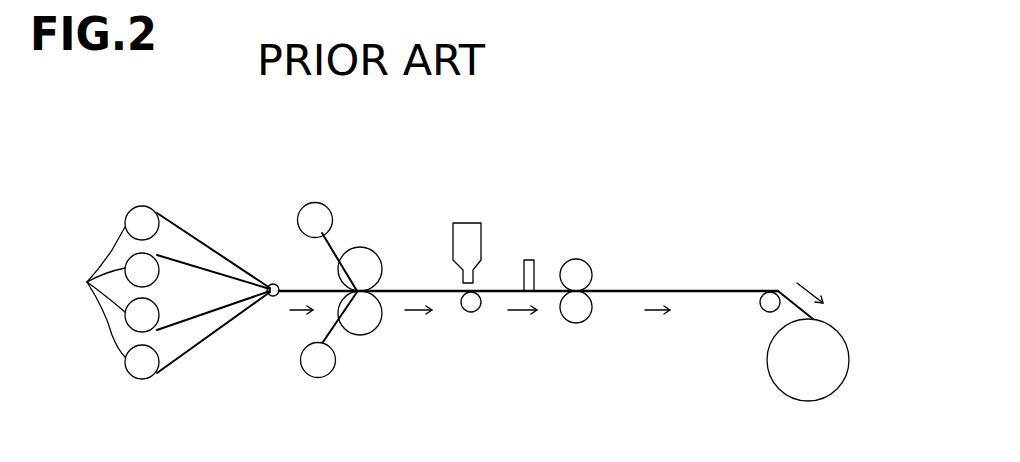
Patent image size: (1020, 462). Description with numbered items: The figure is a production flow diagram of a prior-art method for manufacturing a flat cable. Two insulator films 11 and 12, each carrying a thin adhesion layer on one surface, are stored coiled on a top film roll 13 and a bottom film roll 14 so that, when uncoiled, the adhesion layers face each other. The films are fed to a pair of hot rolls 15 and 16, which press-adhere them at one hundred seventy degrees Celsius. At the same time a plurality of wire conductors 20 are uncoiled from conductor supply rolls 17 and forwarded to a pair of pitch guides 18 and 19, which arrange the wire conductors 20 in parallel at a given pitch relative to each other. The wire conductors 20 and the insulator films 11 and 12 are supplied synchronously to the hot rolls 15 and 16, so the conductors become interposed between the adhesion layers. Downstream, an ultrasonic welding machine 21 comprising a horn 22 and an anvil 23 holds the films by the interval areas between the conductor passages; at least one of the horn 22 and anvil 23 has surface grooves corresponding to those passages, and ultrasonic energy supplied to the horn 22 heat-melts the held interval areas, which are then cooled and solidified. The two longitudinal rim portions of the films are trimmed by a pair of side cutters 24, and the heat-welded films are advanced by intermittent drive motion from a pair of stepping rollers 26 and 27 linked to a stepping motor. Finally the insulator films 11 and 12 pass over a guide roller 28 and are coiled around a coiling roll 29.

The insulator film 11 is at (308, 255).
The insulator film 12 is at (308, 328).
The top film roll 13 is at (322, 203).
The bottom film roll 14 is at (335, 378).
The hot roll 15 is at (365, 248).
The hot roll 16 is at (369, 333).
The conductor supply roll 17 is at (90, 292).
The pitch guide 18 is at (271, 283).
The pitch guide 19 is at (272, 297).
The wire conductor 20 is at (208, 270).
The ultrasonic welding machine 21 is at (455, 212).
The horn 22 is at (481, 222).
The anvil 23 is at (473, 313).
The side cutter 24 is at (534, 260).
The stepping roller 26 is at (578, 258).
The stepping roller 27 is at (582, 322).
The guide roller 28 is at (760, 303).
The coiling roll 29 is at (768, 372).